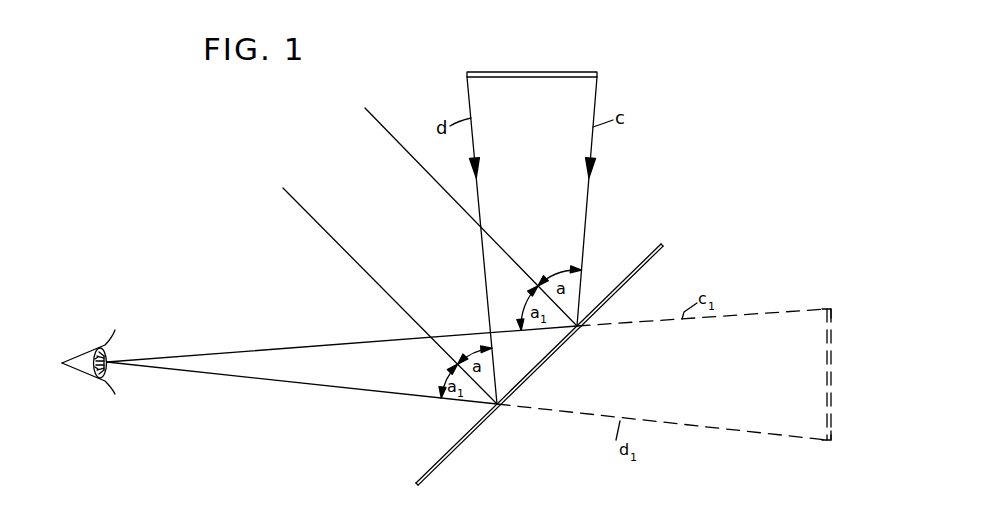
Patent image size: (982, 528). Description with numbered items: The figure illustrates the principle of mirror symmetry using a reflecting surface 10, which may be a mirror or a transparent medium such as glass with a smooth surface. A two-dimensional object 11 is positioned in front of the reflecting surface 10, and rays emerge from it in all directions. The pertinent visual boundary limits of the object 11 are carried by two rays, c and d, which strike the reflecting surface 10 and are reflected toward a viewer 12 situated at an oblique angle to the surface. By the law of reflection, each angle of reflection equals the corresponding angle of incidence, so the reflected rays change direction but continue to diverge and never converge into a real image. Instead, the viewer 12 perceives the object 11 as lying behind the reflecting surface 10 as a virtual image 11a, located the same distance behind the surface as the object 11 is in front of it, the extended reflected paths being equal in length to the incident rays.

The reflecting surface 10 is at (641, 260).
The object 11 is at (545, 72).
The virtual image 11a is at (822, 407).
The viewer 12 is at (75, 352).